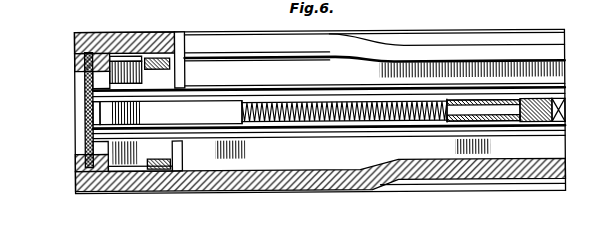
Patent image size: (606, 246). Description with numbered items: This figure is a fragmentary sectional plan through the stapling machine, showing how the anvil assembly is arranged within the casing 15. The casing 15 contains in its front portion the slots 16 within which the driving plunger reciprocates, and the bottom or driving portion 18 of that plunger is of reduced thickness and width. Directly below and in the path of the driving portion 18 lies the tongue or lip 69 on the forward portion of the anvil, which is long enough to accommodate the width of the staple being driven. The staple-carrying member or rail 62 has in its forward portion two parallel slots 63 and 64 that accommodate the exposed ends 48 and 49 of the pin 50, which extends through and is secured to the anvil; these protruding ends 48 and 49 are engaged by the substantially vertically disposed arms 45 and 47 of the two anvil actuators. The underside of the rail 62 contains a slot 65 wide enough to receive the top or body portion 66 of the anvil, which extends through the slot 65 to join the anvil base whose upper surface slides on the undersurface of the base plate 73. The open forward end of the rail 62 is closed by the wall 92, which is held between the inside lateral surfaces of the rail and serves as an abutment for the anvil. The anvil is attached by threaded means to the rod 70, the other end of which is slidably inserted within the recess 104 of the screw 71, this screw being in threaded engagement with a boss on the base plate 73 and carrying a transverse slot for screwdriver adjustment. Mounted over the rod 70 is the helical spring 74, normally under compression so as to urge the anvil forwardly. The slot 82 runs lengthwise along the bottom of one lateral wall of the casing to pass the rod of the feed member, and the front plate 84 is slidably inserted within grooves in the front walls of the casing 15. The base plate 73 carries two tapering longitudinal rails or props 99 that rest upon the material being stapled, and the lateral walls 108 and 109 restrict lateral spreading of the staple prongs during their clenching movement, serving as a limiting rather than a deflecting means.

The casing 15 is at (84, 27).
The slots 16 is at (82, 50).
The lateral wall 109 is at (100, 76).
The bottom or driving portion of the plunger 18 is at (88, 91).
The tongue or lip 69 is at (85, 112).
The front plate 84 is at (87, 124).
The wall 92 is at (100, 150).
The lateral wall 108 is at (90, 160).
The arm of anvil actuator 45 is at (158, 168).
The protruding end of pin 48 is at (182, 170).
The slot 63 is at (208, 142).
The arm of anvil actuator 47 is at (163, 55).
The protruding end of pin 49 is at (188, 69).
The pin 50 is at (236, 51).
The slot 64 is at (222, 82).
The staple-carrying member or rail 62 is at (325, 84).
The slot 82 is at (410, 50).
The rails or props 99 is at (483, 42).
The base plate 73 is at (565, 70).
The screw 71 is at (565, 107).
The recess of the screw 104 is at (501, 102).
The helical spring 74 is at (419, 110).
The rod 70 is at (369, 108).
The slot 65 is at (288, 118).
The top or body portion of the anvil 66 is at (222, 117).